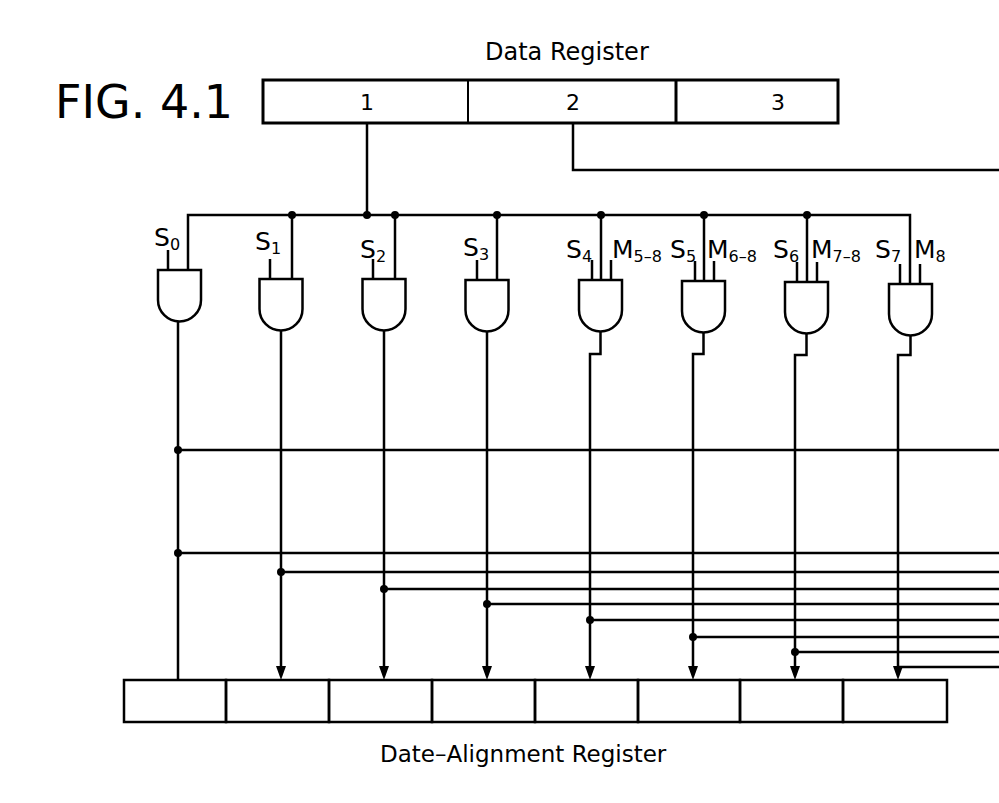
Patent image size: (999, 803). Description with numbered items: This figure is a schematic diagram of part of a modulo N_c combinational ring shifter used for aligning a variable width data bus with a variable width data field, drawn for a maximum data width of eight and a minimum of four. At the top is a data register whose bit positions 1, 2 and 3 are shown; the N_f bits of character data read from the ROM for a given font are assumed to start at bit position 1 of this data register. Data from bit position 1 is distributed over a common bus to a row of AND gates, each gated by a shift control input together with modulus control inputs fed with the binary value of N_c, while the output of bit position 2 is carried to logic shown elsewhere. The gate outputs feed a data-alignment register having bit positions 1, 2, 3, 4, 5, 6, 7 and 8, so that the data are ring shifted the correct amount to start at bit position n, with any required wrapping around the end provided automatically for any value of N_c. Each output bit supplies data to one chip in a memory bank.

The data register bit position 1 is at (175, 701).
The bit 2 is at (277, 701).
The bit 3 is at (380, 701).
The bit 4 is at (483, 701).
The bit 5 is at (586, 701).
The bit 6 is at (689, 701).
The bit 7 is at (791, 701).
The bit 8 is at (895, 701).